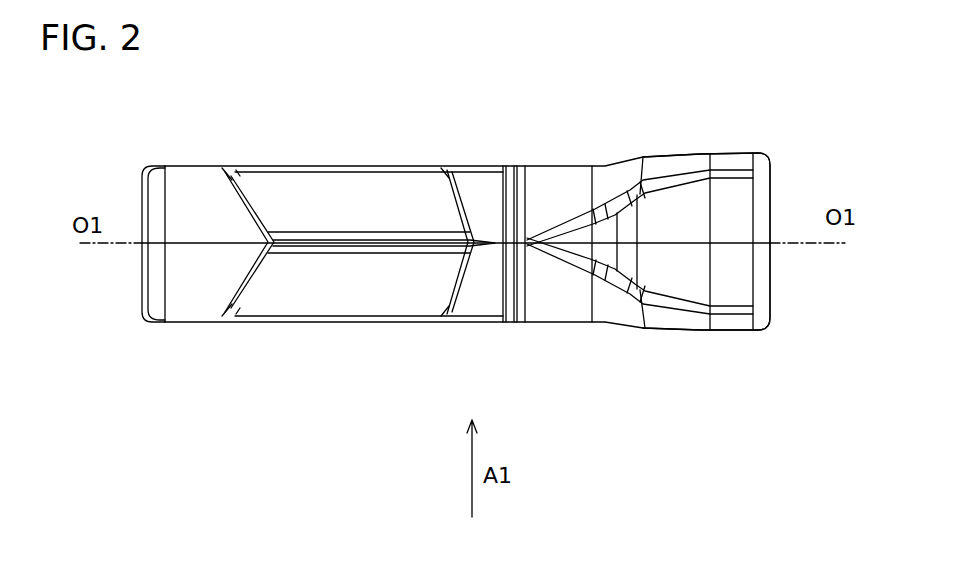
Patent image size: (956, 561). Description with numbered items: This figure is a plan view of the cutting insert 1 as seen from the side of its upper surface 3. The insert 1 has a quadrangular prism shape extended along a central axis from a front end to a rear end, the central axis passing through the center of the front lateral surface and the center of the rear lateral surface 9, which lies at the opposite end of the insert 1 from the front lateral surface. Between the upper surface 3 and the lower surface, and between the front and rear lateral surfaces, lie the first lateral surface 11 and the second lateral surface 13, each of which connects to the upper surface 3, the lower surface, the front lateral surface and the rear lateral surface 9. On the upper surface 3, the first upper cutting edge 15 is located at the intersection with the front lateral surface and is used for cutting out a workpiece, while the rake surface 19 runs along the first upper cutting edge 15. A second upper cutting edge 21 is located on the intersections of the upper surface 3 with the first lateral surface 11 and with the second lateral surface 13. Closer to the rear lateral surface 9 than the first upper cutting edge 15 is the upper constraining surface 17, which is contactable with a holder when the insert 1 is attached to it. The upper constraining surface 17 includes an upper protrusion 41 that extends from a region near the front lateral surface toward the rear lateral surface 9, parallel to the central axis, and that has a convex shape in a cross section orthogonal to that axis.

The insert 1 is at (268, 108).
The upper surface 3 is at (480, 195).
The rear lateral surface 9 is at (143, 287).
The first lateral surface 11 is at (538, 322).
The second lateral surface 13 is at (577, 165).
The first upper cutting edge 15 is at (770, 283).
The upper constraining surface 17 is at (358, 256).
The upper protrusion 41 is at (416, 200).
The rake surface 19 is at (732, 213).
The second upper cutting edge 21 is at (736, 148).